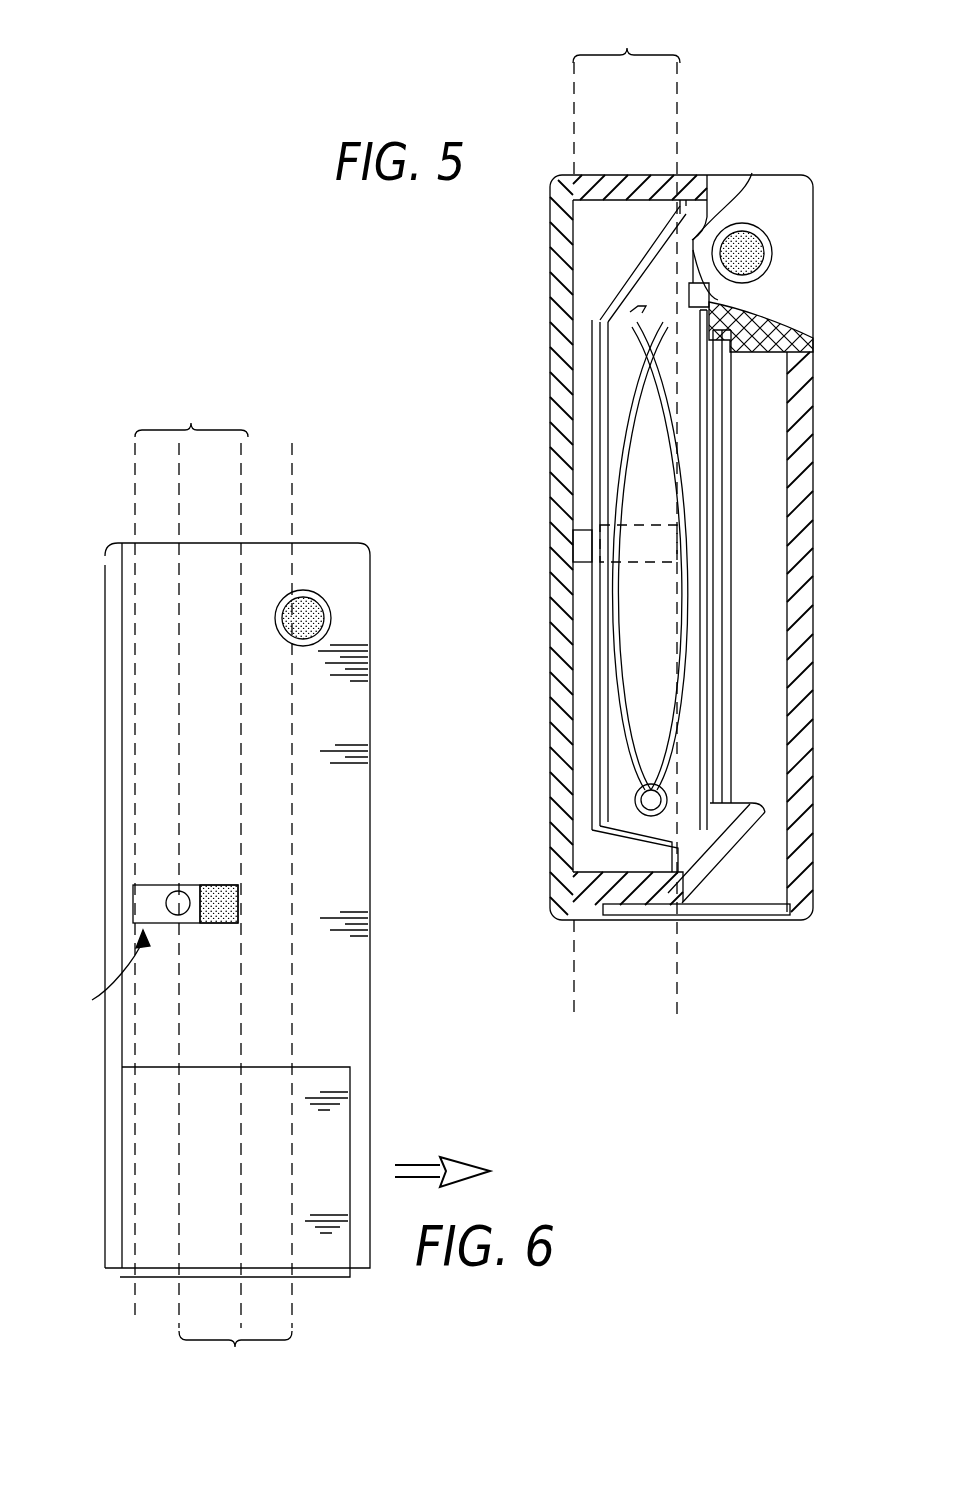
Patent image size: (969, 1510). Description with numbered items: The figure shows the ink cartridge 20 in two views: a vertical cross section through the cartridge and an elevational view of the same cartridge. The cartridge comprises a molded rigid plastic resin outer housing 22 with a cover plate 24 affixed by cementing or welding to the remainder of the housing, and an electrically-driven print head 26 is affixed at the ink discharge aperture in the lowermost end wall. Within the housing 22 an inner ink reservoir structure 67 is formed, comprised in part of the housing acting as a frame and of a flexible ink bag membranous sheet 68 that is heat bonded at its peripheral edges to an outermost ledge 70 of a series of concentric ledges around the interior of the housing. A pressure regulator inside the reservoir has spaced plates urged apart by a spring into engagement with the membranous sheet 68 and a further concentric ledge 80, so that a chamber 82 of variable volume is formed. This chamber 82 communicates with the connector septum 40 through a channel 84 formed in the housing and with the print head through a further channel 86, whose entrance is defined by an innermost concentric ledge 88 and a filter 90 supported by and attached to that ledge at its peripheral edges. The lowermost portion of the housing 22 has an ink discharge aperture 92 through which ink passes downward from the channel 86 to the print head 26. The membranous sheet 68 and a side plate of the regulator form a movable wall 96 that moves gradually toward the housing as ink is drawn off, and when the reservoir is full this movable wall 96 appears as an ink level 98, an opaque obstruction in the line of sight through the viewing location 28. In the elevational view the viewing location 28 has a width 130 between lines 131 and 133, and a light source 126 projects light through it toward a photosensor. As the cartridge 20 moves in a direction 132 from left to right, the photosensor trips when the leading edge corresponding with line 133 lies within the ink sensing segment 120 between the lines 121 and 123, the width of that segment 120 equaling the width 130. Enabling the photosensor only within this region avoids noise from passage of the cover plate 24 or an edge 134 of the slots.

In FIG. 6, the ink cartridge 20 is at (372, 690).
In FIG. 5, the outer housing 22 is at (690, 175).
In FIG. 6, the outer housing 22 is at (372, 815).
In FIG. 6, the cover plate 24 is at (104, 588).
In FIG. 5, the print head 26 is at (620, 922).
In FIG. 6, the viewing location 28 is at (99, 975).
In FIG. 5, the septum 40 is at (766, 242).
In FIG. 6, the septum 40 is at (322, 625).
In FIG. 5, the inner ink reservoir structure 67 is at (626, 277).
In FIG. 5, the flexible ink bag membranous sheet 68 is at (604, 330).
In FIG. 5, the outermost ledge 70 is at (685, 208).
In FIG. 5, the further concentric ledge 80 is at (733, 304).
In FIG. 5, the chamber 82 is at (596, 352).
In FIG. 5, the channel 84 is at (750, 172).
In FIG. 5, the further channel 86 is at (760, 620).
In FIG. 5, the innermost concentric ledge 88 is at (790, 328).
In FIG. 5, the filter 90 is at (745, 515).
In FIG. 5, the ink discharge aperture 92 is at (665, 906).
In FIG. 5, the movable wall 96 is at (608, 540).
In FIG. 6, the ink level 98 is at (200, 910).
In FIG. 6, the ink sensing region 120 is at (235, 1360).
In FIG. 6, the line 121 is at (178, 1205).
In FIG. 6, the line 123 is at (292, 1135).
In FIG. 5, the light source 126 is at (630, 497).
In FIG. 6, the light source 126 is at (178, 890).
In FIG. 5, the width 130 is at (626, 37).
In FIG. 6, the width 130 is at (191, 411).
In FIG. 6, the line 131 is at (132, 1200).
In FIG. 6, the direction 132 is at (473, 1172).
In FIG. 6, the line 133 is at (240, 1035).
In FIG. 6, the edge 134 is at (240, 905).